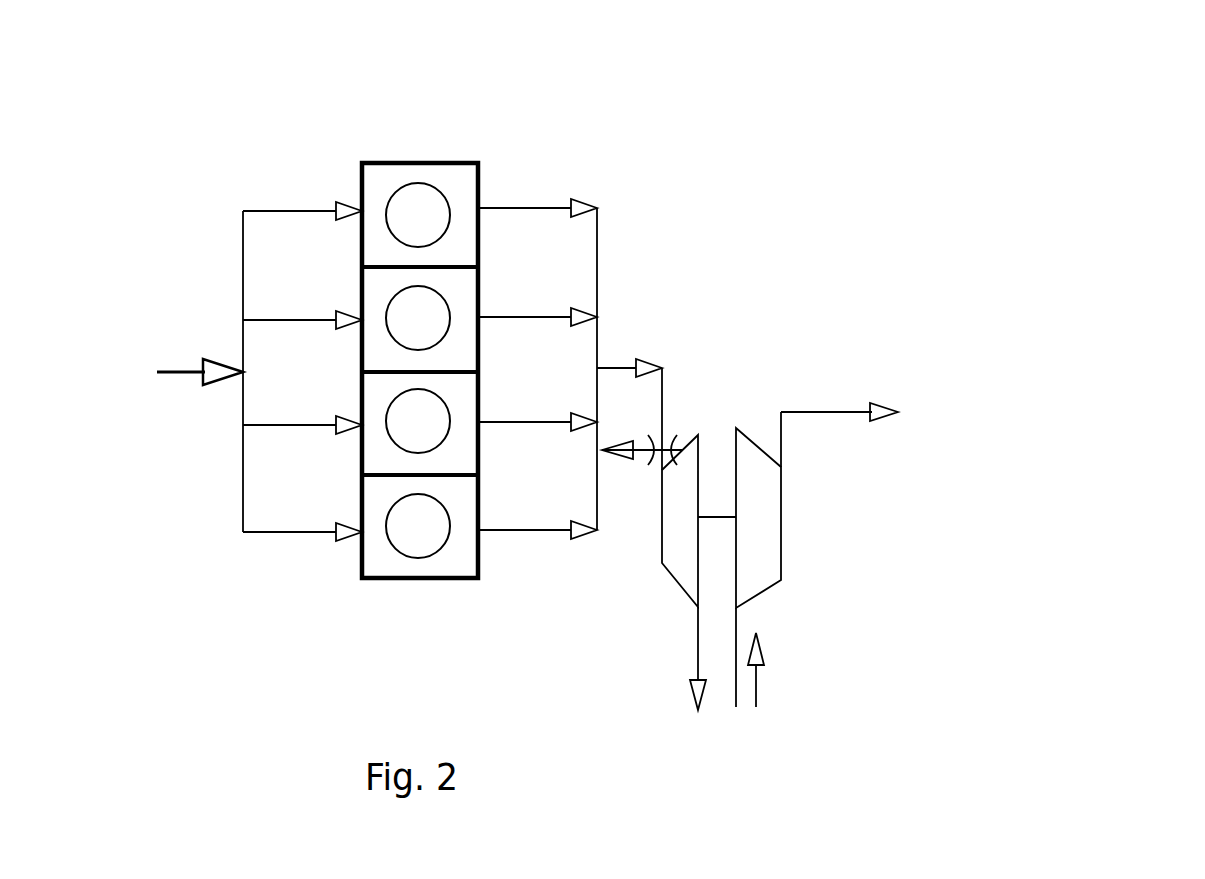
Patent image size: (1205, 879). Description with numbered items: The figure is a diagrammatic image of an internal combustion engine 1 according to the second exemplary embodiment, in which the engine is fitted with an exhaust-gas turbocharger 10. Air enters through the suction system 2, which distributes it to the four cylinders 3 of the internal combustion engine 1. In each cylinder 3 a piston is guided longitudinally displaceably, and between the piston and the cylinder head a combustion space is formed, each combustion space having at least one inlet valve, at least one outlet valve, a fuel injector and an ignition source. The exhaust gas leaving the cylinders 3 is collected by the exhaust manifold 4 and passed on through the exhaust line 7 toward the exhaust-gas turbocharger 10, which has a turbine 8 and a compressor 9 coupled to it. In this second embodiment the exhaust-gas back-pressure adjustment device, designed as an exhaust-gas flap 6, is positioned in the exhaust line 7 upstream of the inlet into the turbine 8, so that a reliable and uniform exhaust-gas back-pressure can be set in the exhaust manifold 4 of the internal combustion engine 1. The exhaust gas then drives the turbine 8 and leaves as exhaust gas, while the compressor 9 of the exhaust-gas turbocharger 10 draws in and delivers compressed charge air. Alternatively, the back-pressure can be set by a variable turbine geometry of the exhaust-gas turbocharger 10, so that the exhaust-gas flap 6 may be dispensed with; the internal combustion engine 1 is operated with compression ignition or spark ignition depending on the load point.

The internal combustion engine 1 is at (650, 95).
The suction system 2 is at (243, 229).
The cylinders 3 is at (430, 236).
The exhaust manifold 4 is at (529, 208).
The exhaust-gas flap 6 is at (662, 450).
The exhaust line 7 is at (620, 368).
The turbine 8 is at (662, 530).
The compressor 9 is at (781, 487).
The exhaust-gas turbocharger 10 is at (880, 305).